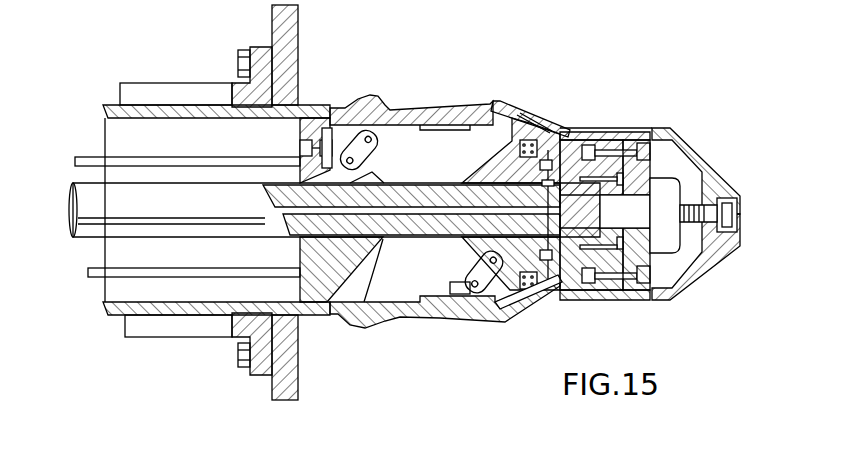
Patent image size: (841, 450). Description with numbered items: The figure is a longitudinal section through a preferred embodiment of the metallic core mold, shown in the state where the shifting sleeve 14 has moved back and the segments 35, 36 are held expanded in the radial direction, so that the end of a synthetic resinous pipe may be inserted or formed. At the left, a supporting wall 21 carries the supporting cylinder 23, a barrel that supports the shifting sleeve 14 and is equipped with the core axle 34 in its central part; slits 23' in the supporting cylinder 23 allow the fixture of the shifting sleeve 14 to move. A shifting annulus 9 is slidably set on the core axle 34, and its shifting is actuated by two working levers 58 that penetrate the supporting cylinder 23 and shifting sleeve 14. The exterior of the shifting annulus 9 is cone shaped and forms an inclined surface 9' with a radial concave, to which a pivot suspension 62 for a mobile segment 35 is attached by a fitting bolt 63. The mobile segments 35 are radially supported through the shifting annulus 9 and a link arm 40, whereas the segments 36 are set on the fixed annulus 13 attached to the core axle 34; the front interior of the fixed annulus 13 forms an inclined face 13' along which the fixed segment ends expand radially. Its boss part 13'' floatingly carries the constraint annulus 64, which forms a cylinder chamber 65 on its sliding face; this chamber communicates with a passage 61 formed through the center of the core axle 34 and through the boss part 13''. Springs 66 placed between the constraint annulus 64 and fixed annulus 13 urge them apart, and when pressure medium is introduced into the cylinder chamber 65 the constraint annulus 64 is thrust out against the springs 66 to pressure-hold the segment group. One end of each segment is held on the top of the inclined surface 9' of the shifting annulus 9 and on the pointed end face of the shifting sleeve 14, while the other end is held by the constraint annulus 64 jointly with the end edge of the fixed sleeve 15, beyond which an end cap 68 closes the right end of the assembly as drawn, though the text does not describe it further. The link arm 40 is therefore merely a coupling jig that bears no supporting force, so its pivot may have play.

The shifting annulus 9 is at (329, 269).
The inclined surface 9' is at (377, 270).
The fixed annulus 13 is at (530, 108).
The inclined face 13' is at (498, 204).
The boss part 13'' is at (605, 193).
The shifting sleeve 14 is at (160, 118).
The fixed sleeve 15 is at (632, 132).
The supporting wall 21 is at (298, 20).
The supporting cylinder 23 is at (252, 194).
The slits 23' is at (151, 195).
The core axle 34 is at (78, 190).
The mobile segments 35 is at (462, 106).
The fixed segments 36 is at (460, 318).
The link arm 40 is at (374, 152).
The working levers 58 is at (90, 157).
The passage 61 is at (290, 202).
The pivot suspension 62 is at (327, 140).
The fitting bolt 63 is at (300, 148).
The constraint annulus 64 is at (522, 118).
The cylinder chamber 65 is at (548, 150).
The spring 66 is at (524, 313).
The end cap 68 is at (700, 268).